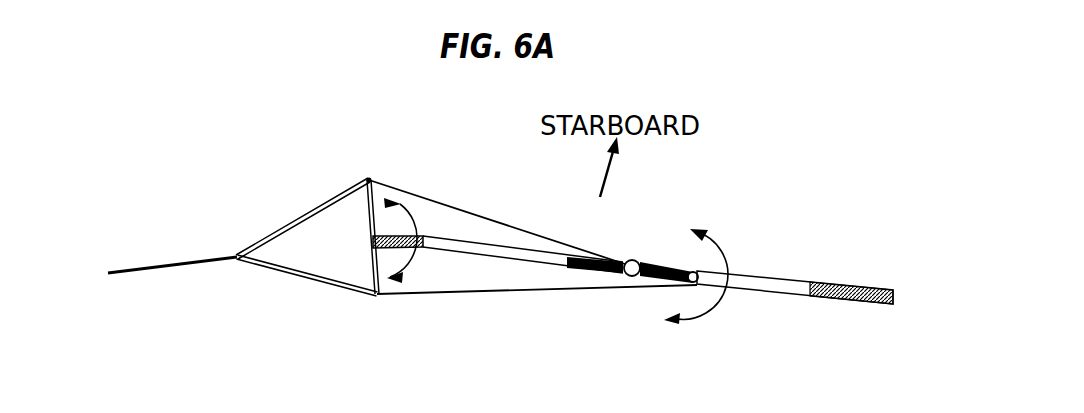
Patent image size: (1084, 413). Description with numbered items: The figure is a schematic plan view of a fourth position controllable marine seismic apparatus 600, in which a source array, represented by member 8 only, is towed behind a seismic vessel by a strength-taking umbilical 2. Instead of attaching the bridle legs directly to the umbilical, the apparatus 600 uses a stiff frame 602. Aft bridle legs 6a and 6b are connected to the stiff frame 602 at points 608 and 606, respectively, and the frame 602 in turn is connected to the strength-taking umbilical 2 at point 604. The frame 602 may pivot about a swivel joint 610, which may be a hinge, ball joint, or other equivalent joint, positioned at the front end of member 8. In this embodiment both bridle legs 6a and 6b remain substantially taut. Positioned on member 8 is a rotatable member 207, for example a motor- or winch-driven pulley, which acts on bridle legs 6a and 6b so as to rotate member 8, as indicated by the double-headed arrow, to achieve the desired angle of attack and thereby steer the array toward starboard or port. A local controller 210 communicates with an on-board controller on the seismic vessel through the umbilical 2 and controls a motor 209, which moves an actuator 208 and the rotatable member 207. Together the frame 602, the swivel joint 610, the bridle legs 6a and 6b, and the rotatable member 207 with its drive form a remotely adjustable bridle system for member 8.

The strength-taking umbilical 2 is at (141, 268).
The position controllable marine seismic apparatus 600 is at (428, 162).
The point 604 is at (238, 262).
The stiff frame 602 is at (287, 268).
The point 606 is at (368, 180).
The point 608 is at (378, 296).
The swivel joint 610 is at (375, 243).
The aft bridle leg 6a is at (497, 210).
The aft bridle leg 6b is at (489, 296).
The local controller 210 is at (583, 273).
The motor 209 is at (628, 278).
The actuator 208 is at (665, 262).
The rotatable member 207 is at (698, 283).
The member 8 is at (836, 283).